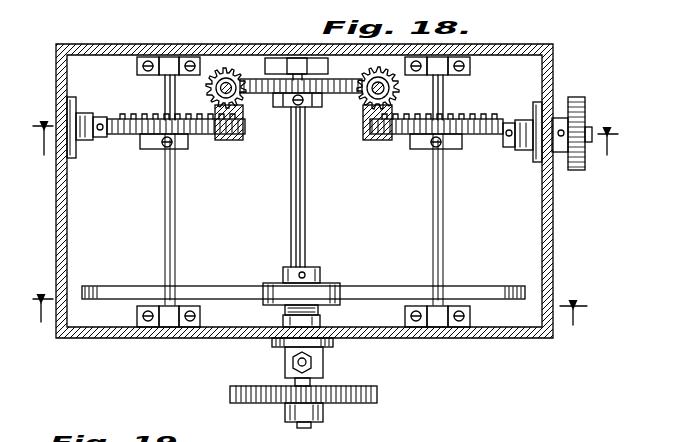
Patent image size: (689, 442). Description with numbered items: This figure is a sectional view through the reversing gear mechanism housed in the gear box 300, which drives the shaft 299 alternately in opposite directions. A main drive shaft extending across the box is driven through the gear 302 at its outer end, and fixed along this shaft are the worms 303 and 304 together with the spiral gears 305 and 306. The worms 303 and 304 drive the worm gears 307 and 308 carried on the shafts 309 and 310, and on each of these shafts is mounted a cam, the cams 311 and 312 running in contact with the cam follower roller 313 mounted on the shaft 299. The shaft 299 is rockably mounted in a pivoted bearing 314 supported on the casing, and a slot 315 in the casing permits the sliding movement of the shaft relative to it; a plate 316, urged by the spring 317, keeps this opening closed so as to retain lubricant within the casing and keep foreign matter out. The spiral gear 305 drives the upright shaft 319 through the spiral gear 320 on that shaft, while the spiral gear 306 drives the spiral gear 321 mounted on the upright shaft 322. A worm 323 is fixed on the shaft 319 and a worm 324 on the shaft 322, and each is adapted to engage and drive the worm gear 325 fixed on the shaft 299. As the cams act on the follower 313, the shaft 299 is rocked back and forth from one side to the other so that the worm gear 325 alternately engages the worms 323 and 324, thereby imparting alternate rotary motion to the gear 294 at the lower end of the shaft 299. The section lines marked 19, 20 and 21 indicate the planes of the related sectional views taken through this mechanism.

The gear box 300 is at (553, 247).
The shaft 310 is at (176, 214).
The shaft 309 is at (446, 182).
The worm gear 325 is at (263, 80).
The spiral gear 321 is at (238, 96).
The worm 324 is at (228, 70).
The upright shaft 322 is at (215, 89).
The upright shaft 319 is at (380, 76).
The spiral gear 320 is at (397, 95).
The spiral gear 306 is at (229, 141).
The worm 323 is at (368, 95).
The worm gear 308 is at (121, 118).
The worm 304 is at (145, 138).
The worm gear 307 is at (483, 124).
The spiral gear 305 is at (402, 150).
The worm 303 is at (503, 136).
The gear 302 is at (585, 107).
The section line 20— 20 is at (331, 136).
The section line 21— 21 is at (314, 309).
The shaft 299 is at (314, 200).
The section line 19— 19 is at (307, 240).
The cam 312 is at (212, 287).
The cam 311 is at (484, 290).
The cam follower roller 313 is at (330, 282).
The plate 316 is at (283, 321).
The spring 317 is at (322, 318).
The slot 315 is at (338, 335).
The pivoted bearing 314 is at (282, 343).
The gear 294 is at (377, 394).